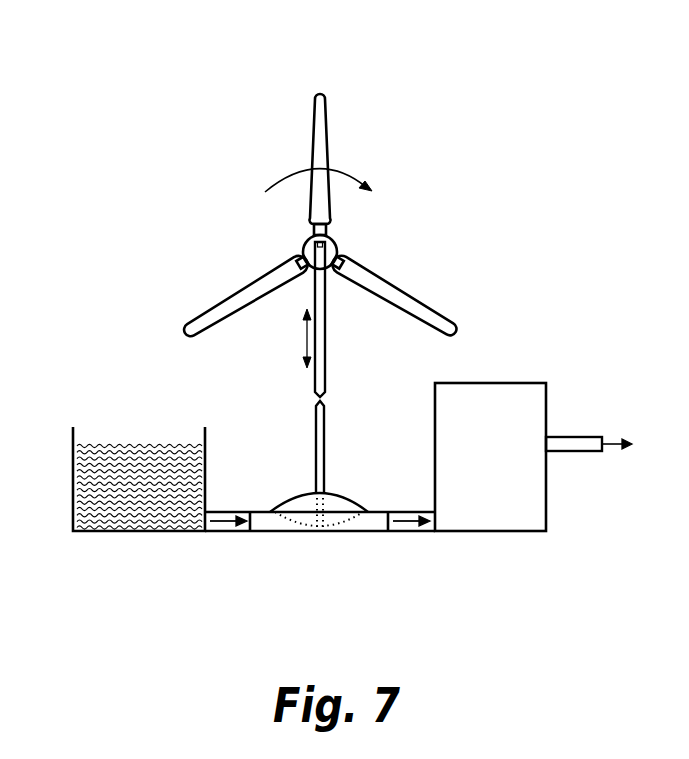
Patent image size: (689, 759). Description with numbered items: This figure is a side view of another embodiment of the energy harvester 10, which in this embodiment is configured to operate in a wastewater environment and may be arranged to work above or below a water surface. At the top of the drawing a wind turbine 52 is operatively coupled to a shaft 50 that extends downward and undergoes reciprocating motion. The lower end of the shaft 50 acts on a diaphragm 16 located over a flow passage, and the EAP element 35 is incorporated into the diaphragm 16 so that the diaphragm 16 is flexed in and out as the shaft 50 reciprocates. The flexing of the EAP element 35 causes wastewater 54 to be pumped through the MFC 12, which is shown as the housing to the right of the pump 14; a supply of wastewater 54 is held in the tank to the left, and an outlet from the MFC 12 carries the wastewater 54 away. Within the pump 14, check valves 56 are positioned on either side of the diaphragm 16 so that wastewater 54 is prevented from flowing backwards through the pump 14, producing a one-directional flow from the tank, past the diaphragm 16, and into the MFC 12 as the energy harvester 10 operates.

The energy harvester 10 is at (103, 82).
The MFC 12 is at (530, 383).
The pump 14 is at (320, 536).
The diaphragm 16 is at (328, 464).
The EAP element 35 is at (350, 497).
The shaft 50 is at (325, 332).
The wind turbine 52 is at (398, 283).
The wastewater 54 is at (130, 443).
The check valves 56 is at (320, 489).